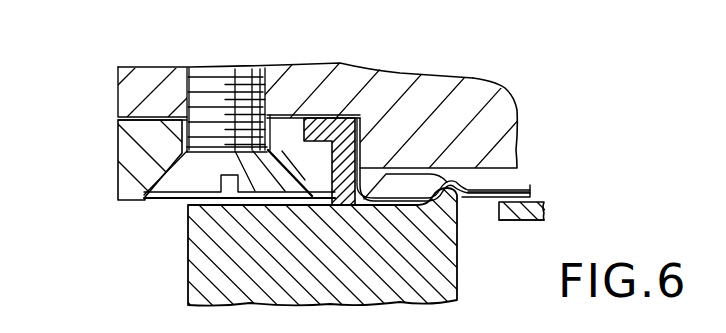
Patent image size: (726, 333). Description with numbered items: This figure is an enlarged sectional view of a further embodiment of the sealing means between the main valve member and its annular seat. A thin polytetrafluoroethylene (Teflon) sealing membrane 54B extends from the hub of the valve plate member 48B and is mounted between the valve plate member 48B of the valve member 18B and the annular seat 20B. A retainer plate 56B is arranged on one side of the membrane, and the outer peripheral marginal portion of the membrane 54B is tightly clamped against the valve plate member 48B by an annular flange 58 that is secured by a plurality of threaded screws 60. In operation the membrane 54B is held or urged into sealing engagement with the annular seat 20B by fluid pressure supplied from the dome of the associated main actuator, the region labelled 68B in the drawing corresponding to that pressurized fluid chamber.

The valve member 18B is at (487, 74).
The valve plate member 48B is at (500, 110).
The annular seat 20B is at (460, 167).
The thin strip 68B is at (505, 183).
The annular flange 58 is at (126, 147).
The threaded screws 60 is at (170, 195).
The sealing membrane 54B is at (522, 203).
The retainer plate 56B is at (510, 220).